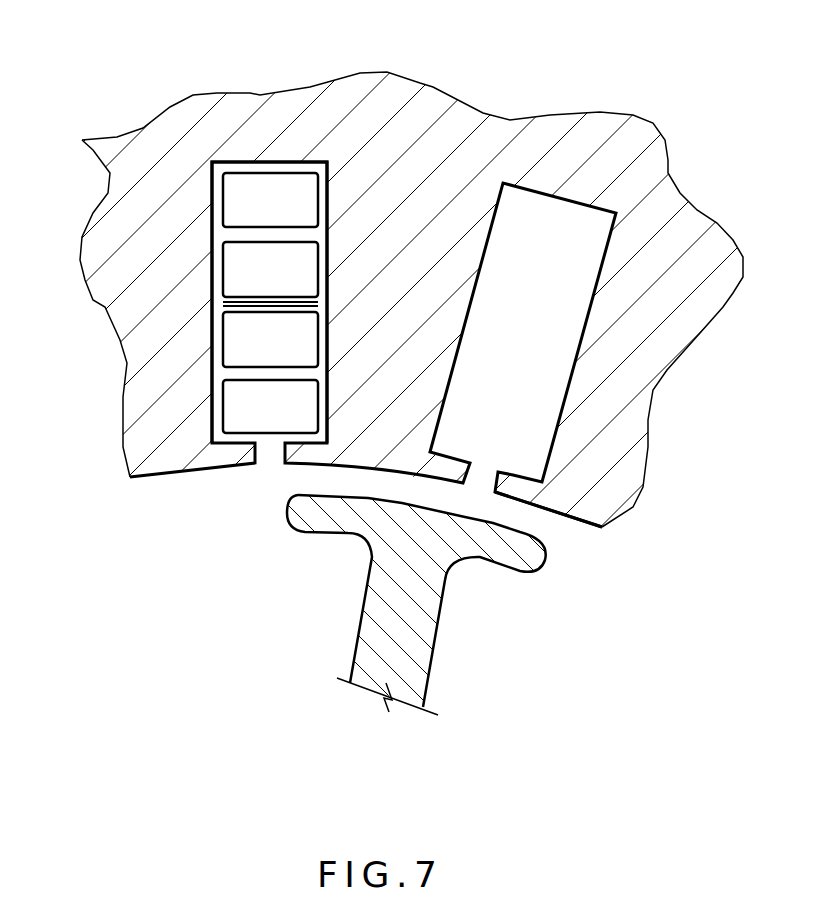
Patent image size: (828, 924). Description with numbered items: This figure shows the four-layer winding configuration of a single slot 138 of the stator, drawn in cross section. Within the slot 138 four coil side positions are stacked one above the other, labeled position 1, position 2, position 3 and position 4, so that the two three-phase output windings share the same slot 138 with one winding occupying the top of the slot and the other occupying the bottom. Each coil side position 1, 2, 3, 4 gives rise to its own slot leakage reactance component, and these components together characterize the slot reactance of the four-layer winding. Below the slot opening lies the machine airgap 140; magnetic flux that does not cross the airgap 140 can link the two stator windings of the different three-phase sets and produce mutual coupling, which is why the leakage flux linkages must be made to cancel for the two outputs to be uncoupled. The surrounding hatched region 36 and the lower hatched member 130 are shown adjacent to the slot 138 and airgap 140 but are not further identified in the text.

The housing body 36 is at (440, 283).
The mating connector member 130 is at (430, 629).
The slot 138 is at (356, 237).
The machine airgap 140 is at (532, 518).
The coil side position 1 is at (270, 200).
The coil side position 2 is at (270, 269).
The coil side position 3 is at (270, 339).
The coil side position 4 is at (270, 406).